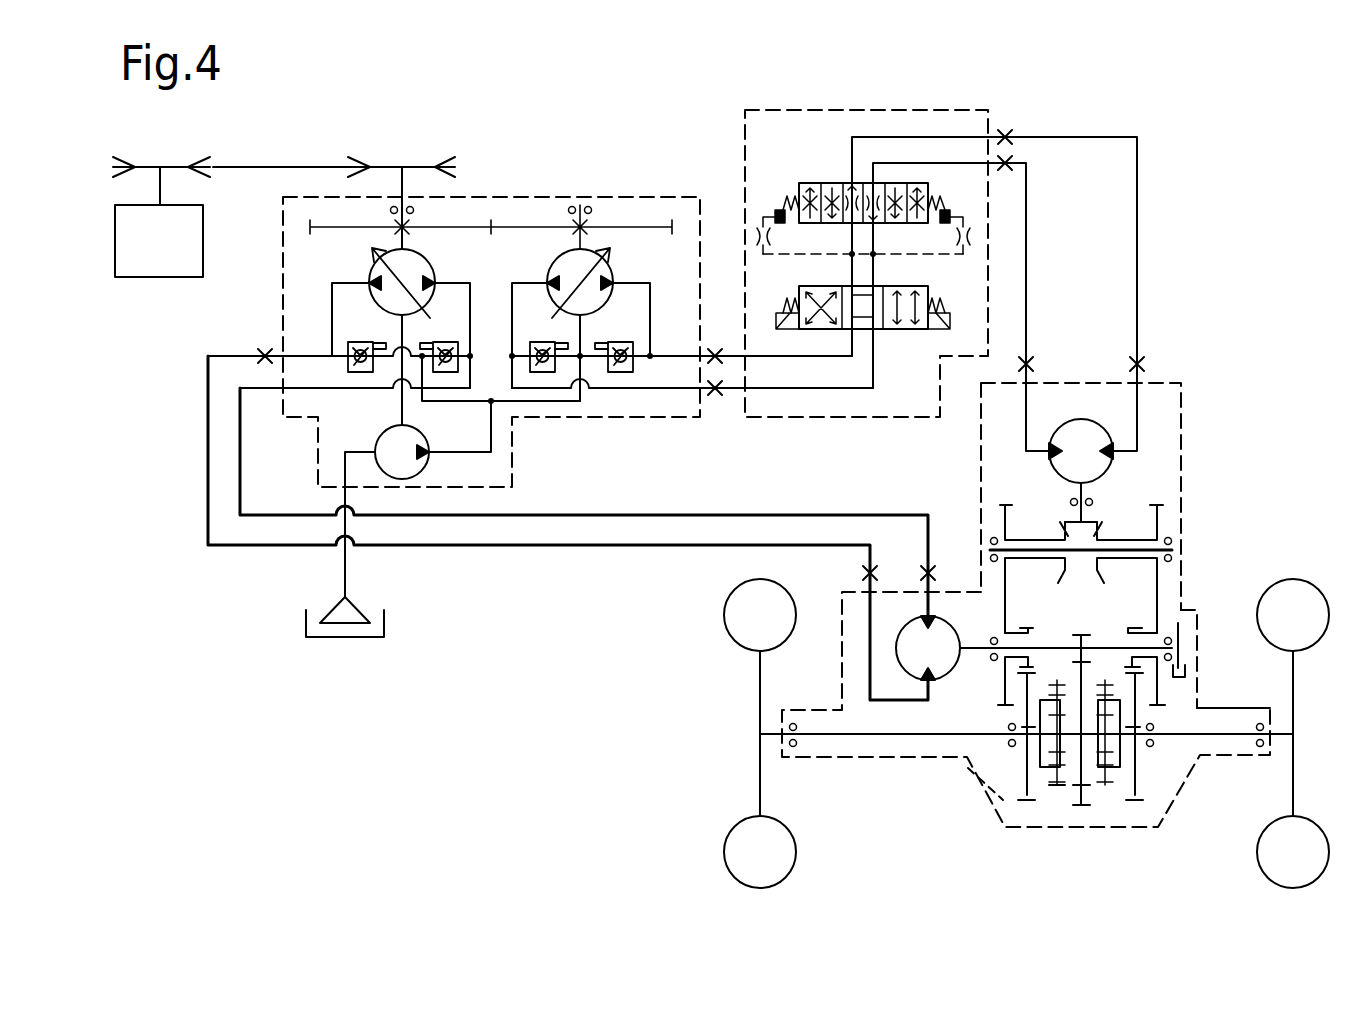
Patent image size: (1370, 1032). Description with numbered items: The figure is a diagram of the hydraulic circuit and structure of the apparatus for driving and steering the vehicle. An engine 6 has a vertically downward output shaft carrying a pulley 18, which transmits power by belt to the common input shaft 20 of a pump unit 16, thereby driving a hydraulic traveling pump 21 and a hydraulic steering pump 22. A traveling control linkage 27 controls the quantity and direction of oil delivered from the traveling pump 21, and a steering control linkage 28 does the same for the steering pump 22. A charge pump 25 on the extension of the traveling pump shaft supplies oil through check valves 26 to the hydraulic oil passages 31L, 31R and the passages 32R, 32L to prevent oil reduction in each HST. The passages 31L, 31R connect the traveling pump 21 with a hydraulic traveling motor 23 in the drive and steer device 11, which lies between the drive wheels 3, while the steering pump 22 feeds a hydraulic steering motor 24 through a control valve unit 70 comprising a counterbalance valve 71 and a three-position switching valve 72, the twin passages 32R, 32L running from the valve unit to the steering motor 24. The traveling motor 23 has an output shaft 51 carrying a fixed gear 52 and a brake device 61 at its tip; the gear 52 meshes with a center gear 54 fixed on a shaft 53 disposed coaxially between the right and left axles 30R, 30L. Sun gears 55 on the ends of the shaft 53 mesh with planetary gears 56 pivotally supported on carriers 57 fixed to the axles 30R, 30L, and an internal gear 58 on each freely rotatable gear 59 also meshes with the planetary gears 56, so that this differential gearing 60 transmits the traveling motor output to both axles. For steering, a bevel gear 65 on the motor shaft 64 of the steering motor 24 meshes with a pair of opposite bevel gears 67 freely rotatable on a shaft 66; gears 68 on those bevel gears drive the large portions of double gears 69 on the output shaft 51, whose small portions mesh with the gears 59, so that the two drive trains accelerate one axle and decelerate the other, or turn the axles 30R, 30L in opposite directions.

The drive wheel 3 is at (1293, 579).
The engine 6 is at (152, 280).
The drive and steer device 11 is at (925, 758).
The pump unit 16 is at (565, 195).
The pulley 18 is at (171, 162).
The input shaft 20 is at (414, 164).
The hydraulic traveling pump 21 is at (370, 272).
The hydraulic steering pump 22 is at (615, 272).
The hydraulic traveling motor 23 is at (896, 657).
The hydraulic steering motor 24 is at (1080, 418).
The charge pump 25 is at (425, 438).
The check valve 26 is at (620, 374).
The traveling control linkage 27 is at (432, 319).
The steering control linkage 28 is at (550, 319).
The right axle 30R is at (848, 737).
The left axle 30L is at (1222, 737).
The hydraulic oil passage 31L is at (578, 514).
The hydraulic oil passage 31R is at (575, 548).
The hydraulic oil passage 32R is at (1026, 228).
The hydraulic oil passage 32L is at (1137, 215).
The output shaft 51 is at (976, 646).
The gear 52 is at (1081, 645).
The shaft 53 is at (1085, 737).
The center gear 54 is at (1085, 677).
The sun gear 55 is at (1105, 727).
The planetary gear 56 is at (1107, 765).
The carrier 57 is at (1040, 720).
The internal gear 58 is at (1063, 787).
The gear 59 is at (1025, 760).
The differential gearing 60 is at (1008, 796).
The brake device 61 is at (1200, 667).
The motor shaft 64 is at (1095, 487).
The bevel gear 65 is at (1065, 520).
The shaft 66 is at (1130, 553).
The bevel gear 67 is at (1100, 532).
The gear 68 is at (1160, 527).
The double gear 69 is at (1163, 610).
The control valve unit 70 is at (818, 420).
The counterbalance valve 71 is at (811, 163).
The switching valve 72 is at (900, 331).